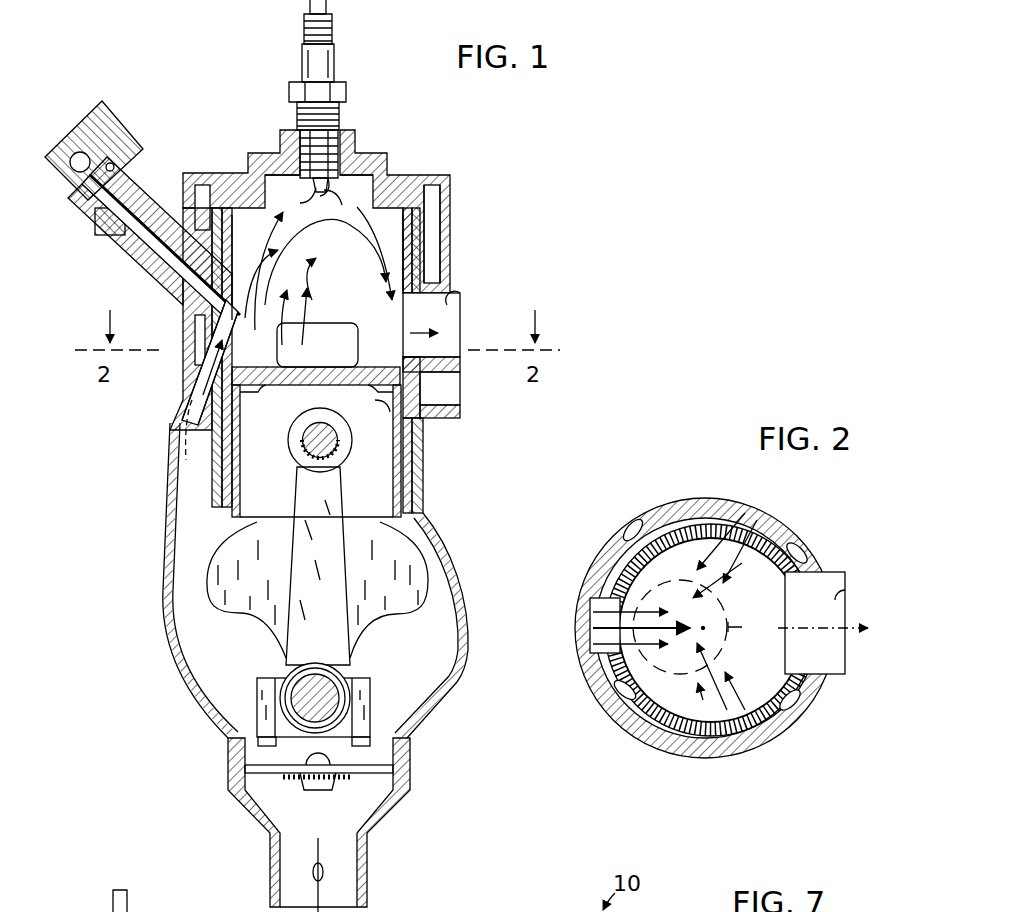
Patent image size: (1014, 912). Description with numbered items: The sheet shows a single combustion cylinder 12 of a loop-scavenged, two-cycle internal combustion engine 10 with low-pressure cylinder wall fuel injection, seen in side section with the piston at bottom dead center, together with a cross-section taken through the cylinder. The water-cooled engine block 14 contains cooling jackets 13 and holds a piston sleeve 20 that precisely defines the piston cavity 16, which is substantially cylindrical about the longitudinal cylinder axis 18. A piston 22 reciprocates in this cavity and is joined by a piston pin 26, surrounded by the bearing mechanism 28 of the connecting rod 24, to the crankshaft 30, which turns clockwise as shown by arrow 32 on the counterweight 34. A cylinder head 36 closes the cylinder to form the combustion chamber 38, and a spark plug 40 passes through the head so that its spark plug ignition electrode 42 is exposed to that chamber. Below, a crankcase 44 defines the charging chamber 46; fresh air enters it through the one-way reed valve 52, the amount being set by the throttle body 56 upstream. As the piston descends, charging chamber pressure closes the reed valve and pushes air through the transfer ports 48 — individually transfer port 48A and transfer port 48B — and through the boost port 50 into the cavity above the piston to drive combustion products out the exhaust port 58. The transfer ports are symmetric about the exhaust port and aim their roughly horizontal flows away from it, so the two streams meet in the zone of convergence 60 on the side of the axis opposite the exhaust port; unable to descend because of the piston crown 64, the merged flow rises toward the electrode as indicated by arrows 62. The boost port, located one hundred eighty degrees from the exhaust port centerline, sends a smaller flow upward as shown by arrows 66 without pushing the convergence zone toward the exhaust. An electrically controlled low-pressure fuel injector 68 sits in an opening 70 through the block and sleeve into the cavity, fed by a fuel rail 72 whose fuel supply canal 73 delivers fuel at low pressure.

In FIG. 1, the internal combustion engine 10 is at (472, 155).
In FIG. 1, the combustion cylinder 12 is at (430, 268).
In FIG. 2, the combustion cylinder 12 is at (668, 512).
In FIG. 1, the cooling jackets 13 is at (202, 185).
In FIG. 2, the cooling jackets 13 is at (633, 524).
In FIG. 1, the engine block 14 is at (433, 237).
In FIG. 1, the piston cavity 16 is at (287, 212).
In FIG. 2, the piston cavity 16 is at (769, 662).
In FIG. 2, the longitudinal cylinder axis 18 is at (733, 606).
In FIG. 1, the piston sleeve 20 is at (447, 228).
In FIG. 2, the piston sleeve 20 is at (612, 690).
In FIG. 1, the piston 22 is at (440, 412).
In FIG. 1, the connecting rod 24 is at (338, 612).
In FIG. 1, the piston pin 26 is at (345, 455).
In FIG. 1, the bearing mechanism 28 is at (323, 424).
In FIG. 1, the crankshaft 30 is at (350, 690).
In FIG. 1, the arrow 32 is at (402, 566).
In FIG. 1, the counterweight 34 is at (428, 598).
In FIG. 1, the cylinder head 36 is at (356, 153).
In FIG. 1, the combustion chamber 38 is at (356, 182).
In FIG. 1, the spark plug 40 is at (335, 58).
In FIG. 1, the spark plug ignition electrode 42 is at (321, 208).
In FIG. 1, the crankcase 44 is at (410, 740).
In FIG. 1, the charging chamber 46 is at (427, 680).
In FIG. 1, the transfer ports 48 is at (333, 340).
In FIG. 2, the transfer port 48A is at (718, 745).
In FIG. 2, the transfer port 48B is at (760, 528).
In FIG. 1, the boost port 50 is at (192, 395).
In FIG. 2, the boost port 50 is at (590, 632).
In FIG. 1, the one-way reed valve 52 is at (385, 798).
In FIG. 1, the throttle body 56 is at (340, 868).
In FIG. 1, the exhaust port 58 is at (448, 306).
In FIG. 2, the exhaust port 58 is at (845, 600).
In FIG. 2, the zone of convergence 60 is at (734, 627).
In FIG. 1, the arrows 62 is at (312, 290).
In FIG. 1, the piston crown 64 is at (366, 367).
In FIG. 1, the arrows 66 is at (225, 342).
In FIG. 1, the low-pressure fuel injector 68 is at (146, 196).
In FIG. 1, the opening 70 is at (186, 282).
In FIG. 1, the fuel rail 72 is at (110, 122).
In FIG. 1, the fuel supply canal 73 is at (82, 155).